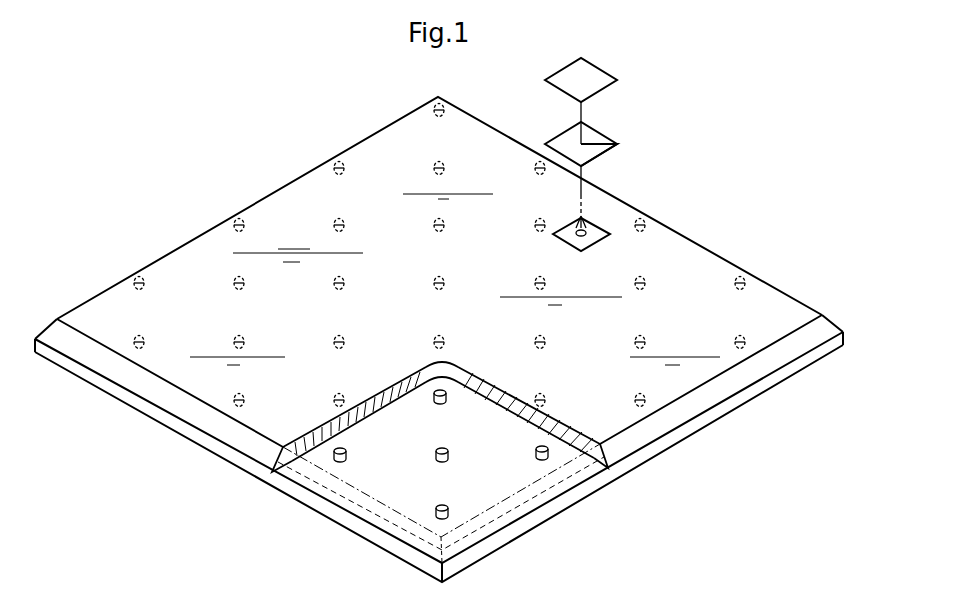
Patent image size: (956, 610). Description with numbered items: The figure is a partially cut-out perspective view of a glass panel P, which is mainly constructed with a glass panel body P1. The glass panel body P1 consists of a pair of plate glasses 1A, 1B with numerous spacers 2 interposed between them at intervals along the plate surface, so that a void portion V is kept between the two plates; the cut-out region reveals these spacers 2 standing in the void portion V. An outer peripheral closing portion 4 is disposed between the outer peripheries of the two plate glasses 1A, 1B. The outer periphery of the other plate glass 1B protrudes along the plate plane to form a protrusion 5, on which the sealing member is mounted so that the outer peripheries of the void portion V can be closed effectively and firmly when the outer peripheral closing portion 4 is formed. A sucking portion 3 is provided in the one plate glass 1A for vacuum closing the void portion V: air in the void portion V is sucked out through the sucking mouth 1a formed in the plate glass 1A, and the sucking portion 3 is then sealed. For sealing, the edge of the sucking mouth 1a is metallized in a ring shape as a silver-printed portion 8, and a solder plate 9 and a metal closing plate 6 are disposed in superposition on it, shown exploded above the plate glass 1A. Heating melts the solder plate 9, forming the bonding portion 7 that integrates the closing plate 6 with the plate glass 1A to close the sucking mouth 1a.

The glass panel P is at (190, 166).
The glass panel body P1 is at (392, 220).
The plate glass 1A is at (757, 268).
The plate glass 1B is at (517, 532).
The sucking mouth 1a is at (573, 230).
The spacers 2 is at (538, 446).
The sucking portion 3 is at (612, 207).
The outer peripheral closing portion 4 is at (172, 402).
The protrusion 5 is at (298, 478).
The closing plate 6 is at (555, 76).
The bonding portion 7 is at (612, 133).
The silver-printed portion 8 is at (560, 240).
The solder plate 9 is at (603, 154).
The void portion V is at (388, 460).